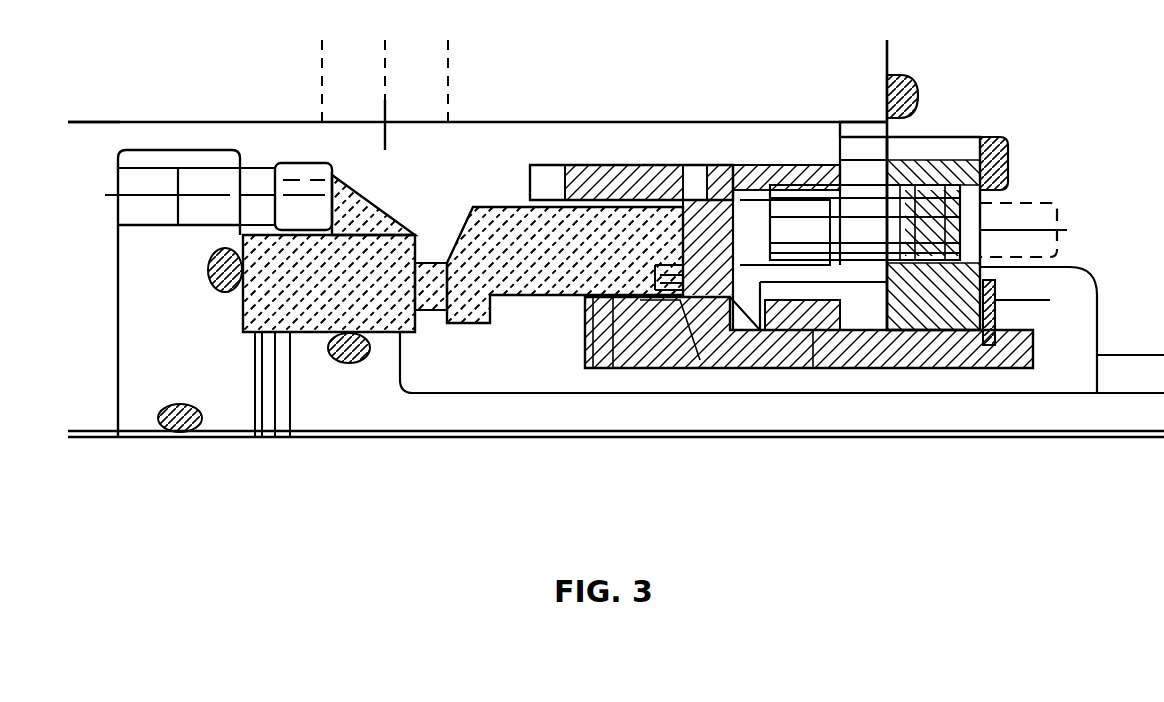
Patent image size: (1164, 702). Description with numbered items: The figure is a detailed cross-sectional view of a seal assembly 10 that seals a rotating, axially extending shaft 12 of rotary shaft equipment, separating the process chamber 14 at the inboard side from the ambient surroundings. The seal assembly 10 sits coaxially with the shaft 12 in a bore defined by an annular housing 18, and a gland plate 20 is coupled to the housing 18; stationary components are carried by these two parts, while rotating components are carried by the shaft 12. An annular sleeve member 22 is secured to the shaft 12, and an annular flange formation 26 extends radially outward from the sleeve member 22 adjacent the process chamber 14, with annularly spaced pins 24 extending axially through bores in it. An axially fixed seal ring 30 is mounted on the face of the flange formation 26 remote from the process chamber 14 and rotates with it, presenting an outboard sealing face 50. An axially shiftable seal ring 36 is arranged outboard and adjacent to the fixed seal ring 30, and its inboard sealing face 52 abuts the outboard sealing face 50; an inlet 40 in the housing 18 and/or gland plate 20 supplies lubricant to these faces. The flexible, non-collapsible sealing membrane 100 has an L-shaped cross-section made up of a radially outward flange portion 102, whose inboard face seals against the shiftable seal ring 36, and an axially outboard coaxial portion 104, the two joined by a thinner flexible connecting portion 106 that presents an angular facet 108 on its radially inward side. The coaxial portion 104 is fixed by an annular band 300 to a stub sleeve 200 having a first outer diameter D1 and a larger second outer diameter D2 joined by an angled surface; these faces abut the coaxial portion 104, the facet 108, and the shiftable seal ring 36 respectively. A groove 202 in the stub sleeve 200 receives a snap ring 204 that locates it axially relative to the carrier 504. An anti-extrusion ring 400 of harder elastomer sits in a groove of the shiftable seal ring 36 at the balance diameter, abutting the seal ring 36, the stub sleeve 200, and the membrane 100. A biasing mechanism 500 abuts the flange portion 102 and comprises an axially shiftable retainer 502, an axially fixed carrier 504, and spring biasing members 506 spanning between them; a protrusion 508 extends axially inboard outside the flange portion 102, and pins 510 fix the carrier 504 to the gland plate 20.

The seal assembly 10 is at (193, 88).
The shaft 12 is at (440, 482).
The process chamber 14 is at (64, 372).
The housing 18 is at (534, 38).
The gland plate 20 is at (1124, 85).
The sleeve member 22 is at (368, 410).
The pins 24 is at (218, 196).
The flange formation 26 is at (190, 320).
The axially fixed seal ring 30 is at (360, 225).
The axially shiftable seal ring 36 is at (518, 300).
The inlet 40 is at (418, 78).
The outboard sealing face 50 is at (380, 332).
The inboard sealing face 52 is at (435, 263).
The sealing membrane 100 is at (662, 165).
The flange portion 102 is at (722, 257).
The coaxial portion 104 is at (802, 315).
The flexible connecting portion 106 is at (710, 380).
The angular facet 108 is at (668, 380).
The stub sleeve 200 is at (940, 447).
The groove 202 is at (990, 373).
The snap ring 204 is at (1050, 300).
The band 300 is at (837, 380).
The anti-extrusion ring 400 is at (613, 368).
The biasing mechanism 500 is at (920, 105).
The retainer 502 is at (735, 165).
The carrier 504 is at (960, 137).
The biasing members 506 is at (873, 195).
The protrusion 508 is at (706, 165).
The pins 510 is at (1033, 205).
The first outer diameter D1 is at (747, 380).
The second outer diameter D2 is at (593, 368).